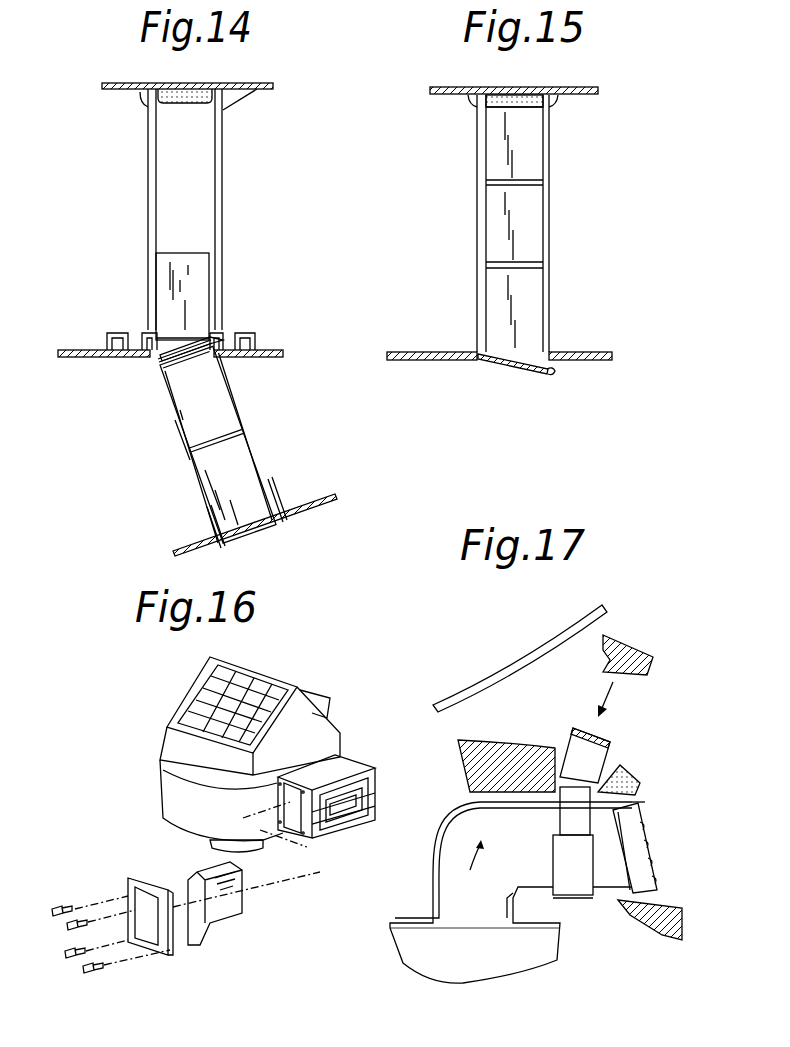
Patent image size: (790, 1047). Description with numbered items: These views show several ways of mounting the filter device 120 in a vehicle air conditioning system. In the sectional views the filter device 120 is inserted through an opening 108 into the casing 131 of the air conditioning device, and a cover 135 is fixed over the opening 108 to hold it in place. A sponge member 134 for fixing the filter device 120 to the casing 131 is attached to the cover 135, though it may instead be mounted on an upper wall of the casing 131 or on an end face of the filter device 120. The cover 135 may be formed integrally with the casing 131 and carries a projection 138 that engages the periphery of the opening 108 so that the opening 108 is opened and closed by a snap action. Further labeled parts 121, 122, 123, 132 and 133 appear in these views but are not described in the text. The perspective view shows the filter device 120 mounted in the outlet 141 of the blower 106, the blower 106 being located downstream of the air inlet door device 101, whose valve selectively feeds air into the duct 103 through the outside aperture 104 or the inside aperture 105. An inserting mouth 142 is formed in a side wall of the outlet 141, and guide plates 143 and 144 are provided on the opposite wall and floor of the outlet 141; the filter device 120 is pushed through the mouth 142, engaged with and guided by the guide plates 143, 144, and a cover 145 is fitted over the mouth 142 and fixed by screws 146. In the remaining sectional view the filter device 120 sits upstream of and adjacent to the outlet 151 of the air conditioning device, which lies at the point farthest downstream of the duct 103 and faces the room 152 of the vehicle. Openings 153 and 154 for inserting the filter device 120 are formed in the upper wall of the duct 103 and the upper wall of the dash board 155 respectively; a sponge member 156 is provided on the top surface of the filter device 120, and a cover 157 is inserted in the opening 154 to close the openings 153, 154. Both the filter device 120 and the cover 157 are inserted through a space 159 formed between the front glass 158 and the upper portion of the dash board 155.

In FIG. 16, the air inlet door device 101 is at (292, 681).
In FIG. 17, the duct 103 is at (458, 853).
In FIG. 16, the outside aperture 104 is at (210, 690).
In FIG. 16, the inside aperture 105 is at (307, 690).
In FIG. 16, the blower 106 is at (153, 800).
In FIG. 14, the opening 108 is at (152, 350).
In FIG. 15, the opening 108 is at (498, 362).
In FIG. 14, the filter device 120 is at (243, 405).
In FIG. 15, the filter device 120 is at (480, 243).
In FIG. 16, the filter device 120 is at (240, 917).
In FIG. 17, the filter device 120 is at (573, 753).
In FIG. 14, the first filter element 121 is at (162, 302).
In FIG. 15, the first filter element 121 is at (532, 170).
In FIG. 14, the second filter element 122 is at (192, 422).
In FIG. 15, the second filter element 122 is at (528, 213).
In FIG. 14, the third filter element 123 is at (213, 473).
In FIG. 15, the third filter element 123 is at (530, 305).
In FIG. 14, the casing 131 is at (115, 83).
In FIG. 15, the casing 131 is at (443, 87).
In FIG. 14, the mounting bracket 132 is at (150, 100).
In FIG. 15, the mounting bracket 132 is at (477, 100).
In FIG. 14, the brace 133 is at (257, 88).
In FIG. 15, the brace 133 is at (550, 103).
In FIG. 14, the sponge member 134 is at (200, 87).
In FIG. 15, the sponge member 134 is at (513, 93).
In FIG. 14, the cover 135 is at (257, 533).
In FIG. 15, the cover 135 is at (507, 368).
In FIG. 15, the projection 138 is at (553, 373).
In FIG. 16, the outlet 141 is at (382, 790).
In FIG. 17, the outlet 141 is at (394, 778).
In FIG. 16, the inserting mouth 142 is at (297, 837).
In FIG. 16, the guide plate 143 is at (343, 780).
In FIG. 16, the guide plate 144 is at (373, 772).
In FIG. 17, the guide plate 144 is at (380, 768).
In FIG. 16, the cover 145 is at (163, 955).
In FIG. 16, the screws 146 is at (54, 907).
In FIG. 17, the outlet 151 is at (630, 843).
In FIG. 17, the room 152 is at (682, 803).
In FIG. 17, the opening 153 is at (615, 773).
In FIG. 17, the opening 154 is at (607, 767).
In FIG. 17, the dash board 155 is at (495, 750).
In FIG. 17, the sponge member 156 is at (580, 727).
In FIG. 17, the cover 157 is at (625, 638).
In FIG. 17, the front glass 158 is at (505, 652).
In FIG. 17, the space 159 is at (607, 618).